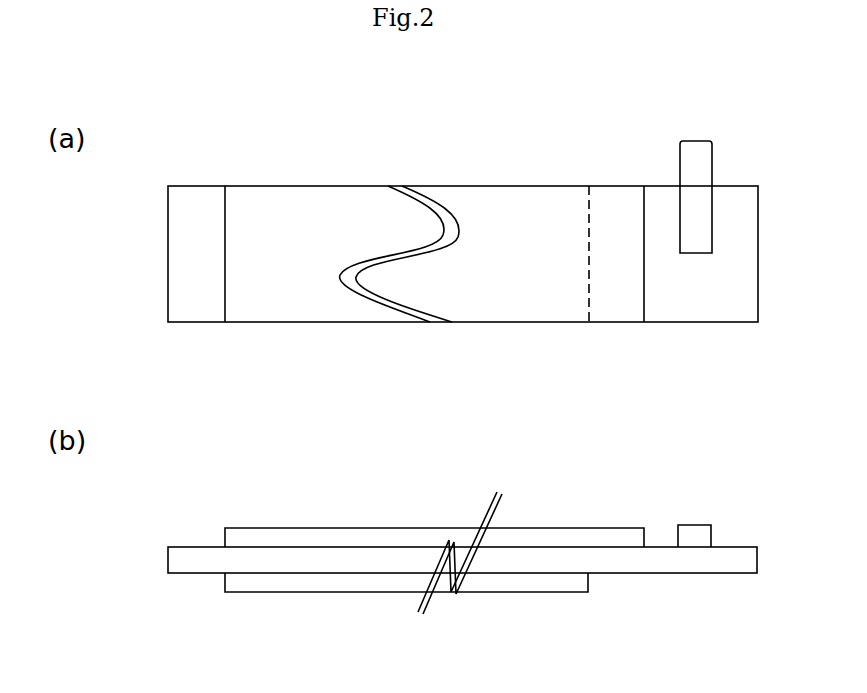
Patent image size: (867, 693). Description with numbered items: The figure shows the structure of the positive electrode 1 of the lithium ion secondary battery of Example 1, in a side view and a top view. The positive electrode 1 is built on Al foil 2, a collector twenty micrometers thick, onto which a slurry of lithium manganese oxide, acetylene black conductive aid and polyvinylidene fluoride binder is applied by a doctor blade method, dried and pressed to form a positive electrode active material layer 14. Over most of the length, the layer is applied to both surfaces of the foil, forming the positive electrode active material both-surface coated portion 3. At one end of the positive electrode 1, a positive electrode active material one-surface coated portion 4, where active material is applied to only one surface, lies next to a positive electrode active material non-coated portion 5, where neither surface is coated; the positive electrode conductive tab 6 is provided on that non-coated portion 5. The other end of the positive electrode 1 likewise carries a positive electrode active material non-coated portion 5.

The positive electrode 1 is at (147, 257).
The Al foil 2 is at (682, 563).
The positive electrode active material both-surface coated portion 3 is at (288, 210).
The positive electrode active material one-surface coated portion 4 is at (620, 210).
The positive electrode active material non-coated portion 5 is at (202, 307).
The positive electrode conductive tab 6 is at (692, 147).
The positive electrode active material layer 14 is at (540, 532).